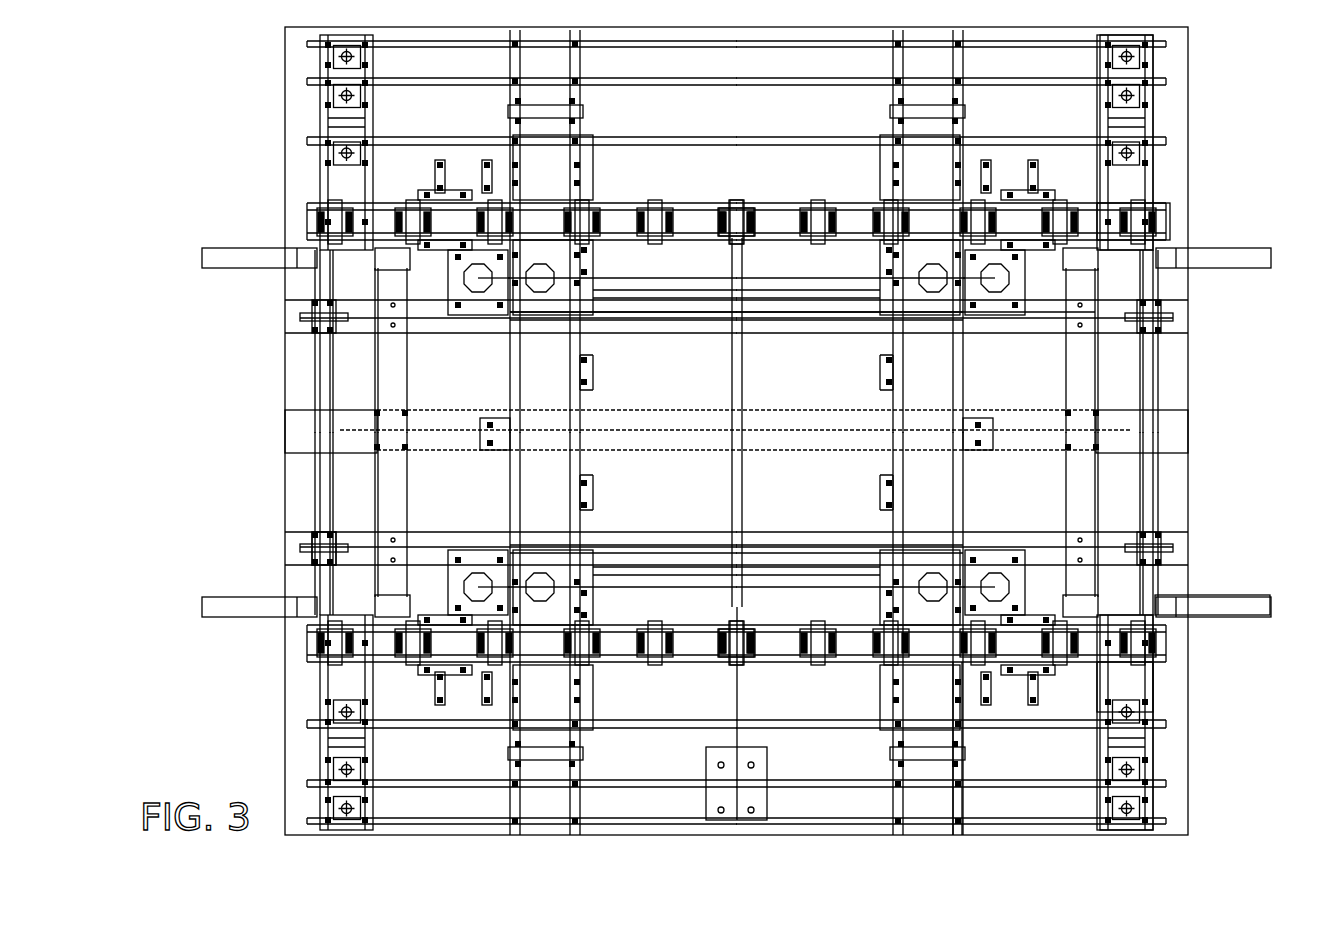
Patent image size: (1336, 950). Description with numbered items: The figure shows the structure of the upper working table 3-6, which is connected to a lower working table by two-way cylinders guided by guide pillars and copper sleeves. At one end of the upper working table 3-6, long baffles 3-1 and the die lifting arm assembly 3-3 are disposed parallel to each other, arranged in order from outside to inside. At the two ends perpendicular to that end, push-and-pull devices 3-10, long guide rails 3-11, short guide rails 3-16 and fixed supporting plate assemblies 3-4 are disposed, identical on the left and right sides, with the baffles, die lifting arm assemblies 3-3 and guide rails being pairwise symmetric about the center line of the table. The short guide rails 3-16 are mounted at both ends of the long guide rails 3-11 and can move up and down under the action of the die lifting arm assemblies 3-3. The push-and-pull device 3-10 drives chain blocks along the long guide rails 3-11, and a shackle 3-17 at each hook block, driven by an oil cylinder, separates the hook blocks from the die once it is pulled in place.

The long baffle 3-1 is at (1130, 137).
The die lifting arm assembly 3-3 is at (1153, 221).
The long guide rail 3-11 is at (627, 327).
The push-and-pull device 3-10 is at (1166, 428).
The short guide rail 3-16 is at (300, 545).
The shackle 3-17 is at (1218, 608).
The upper working table 3-6 is at (1150, 685).
The fixed supporting plate assembly 3-4 is at (958, 797).